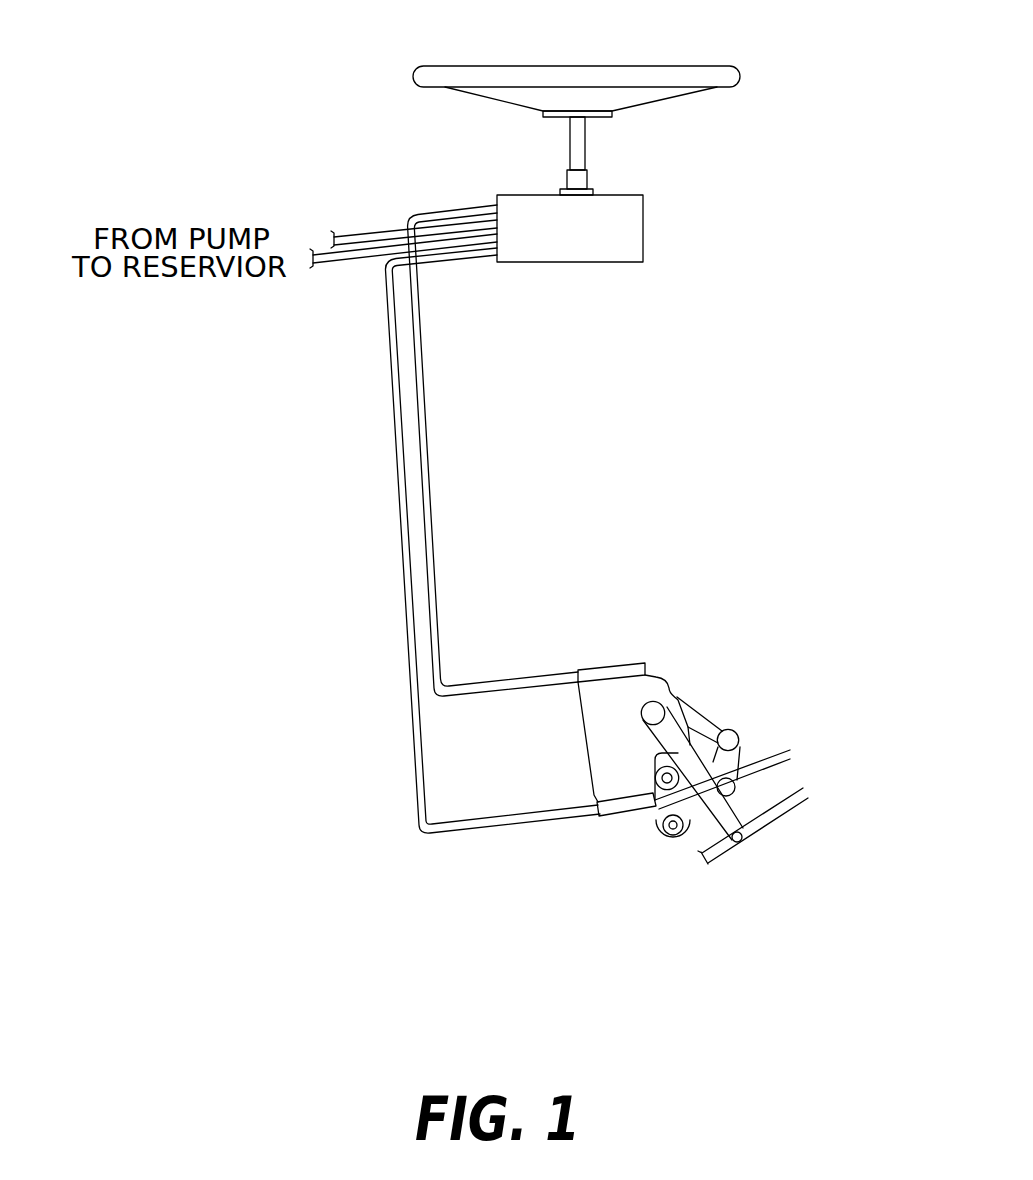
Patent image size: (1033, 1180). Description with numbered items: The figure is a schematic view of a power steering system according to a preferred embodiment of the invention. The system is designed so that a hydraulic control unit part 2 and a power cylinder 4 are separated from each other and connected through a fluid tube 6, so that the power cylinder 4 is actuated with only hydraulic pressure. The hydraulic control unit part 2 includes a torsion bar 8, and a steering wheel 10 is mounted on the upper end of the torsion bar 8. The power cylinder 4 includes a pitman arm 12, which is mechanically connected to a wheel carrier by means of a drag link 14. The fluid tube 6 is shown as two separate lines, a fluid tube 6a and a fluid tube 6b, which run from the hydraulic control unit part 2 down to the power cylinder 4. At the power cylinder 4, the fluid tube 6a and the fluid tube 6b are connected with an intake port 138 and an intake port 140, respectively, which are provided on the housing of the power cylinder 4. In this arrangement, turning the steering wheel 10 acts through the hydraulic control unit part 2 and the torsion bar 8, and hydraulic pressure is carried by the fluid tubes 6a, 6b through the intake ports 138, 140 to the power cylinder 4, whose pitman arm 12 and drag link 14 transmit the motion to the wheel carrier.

The hydraulic control unit part 2 is at (522, 182).
The power cylinder 4 is at (571, 761).
The fluid tube 6 is at (313, 385).
The fluid tube 6a is at (422, 441).
The fluid tube 6b is at (393, 380).
The torsion bar 8 is at (577, 147).
The steering wheel 10 is at (668, 77).
The pitman arm 12 is at (683, 758).
The drag link 14 is at (701, 856).
The intake port 138 is at (603, 815).
The intake port 140 is at (570, 670).